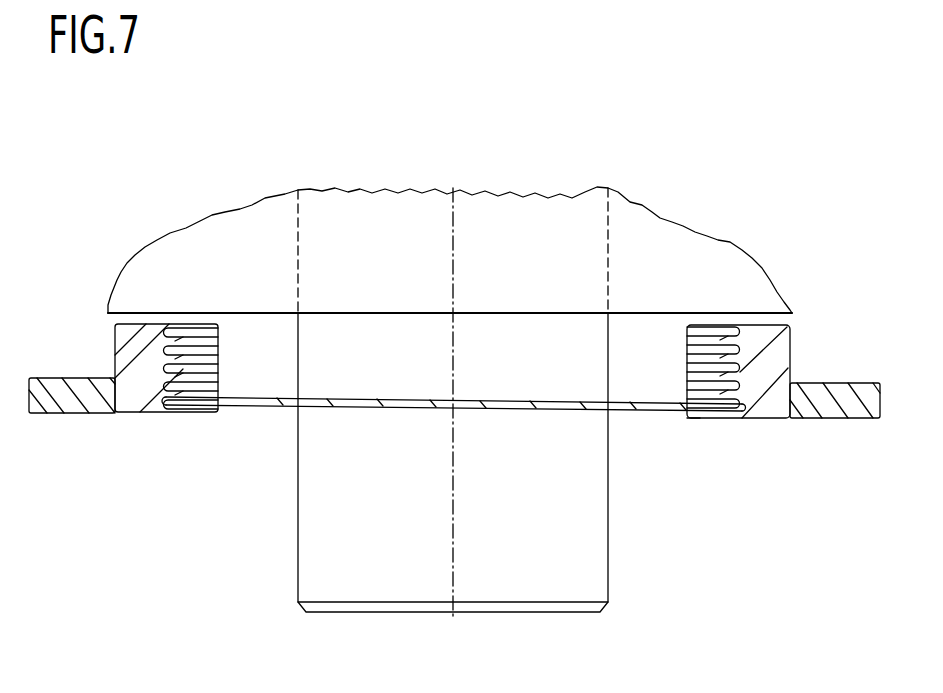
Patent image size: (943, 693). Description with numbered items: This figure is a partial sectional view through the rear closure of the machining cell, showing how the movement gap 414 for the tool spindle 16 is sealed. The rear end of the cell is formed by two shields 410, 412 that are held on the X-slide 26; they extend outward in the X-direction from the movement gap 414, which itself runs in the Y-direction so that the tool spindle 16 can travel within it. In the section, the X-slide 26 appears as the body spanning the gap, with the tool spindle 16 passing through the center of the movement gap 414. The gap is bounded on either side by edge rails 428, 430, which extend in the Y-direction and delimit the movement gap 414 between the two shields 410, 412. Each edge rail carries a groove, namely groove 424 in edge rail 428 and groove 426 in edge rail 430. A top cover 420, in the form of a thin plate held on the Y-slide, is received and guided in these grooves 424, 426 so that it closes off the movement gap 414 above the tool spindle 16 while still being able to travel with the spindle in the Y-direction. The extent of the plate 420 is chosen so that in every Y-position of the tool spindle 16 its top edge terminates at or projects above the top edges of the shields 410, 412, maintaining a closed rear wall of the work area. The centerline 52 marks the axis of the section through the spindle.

The tool spindle 16 is at (333, 588).
The X-slide 26 is at (708, 258).
The central axis 52 is at (453, 208).
The shield 410 is at (72, 430).
The shield 412 is at (862, 432).
The movement gap 414 is at (675, 428).
The top cover 420 is at (283, 403).
The groove 424 is at (197, 403).
The groove 426 is at (718, 407).
The edge rail 428 is at (132, 360).
The edge rail 430 is at (772, 368).